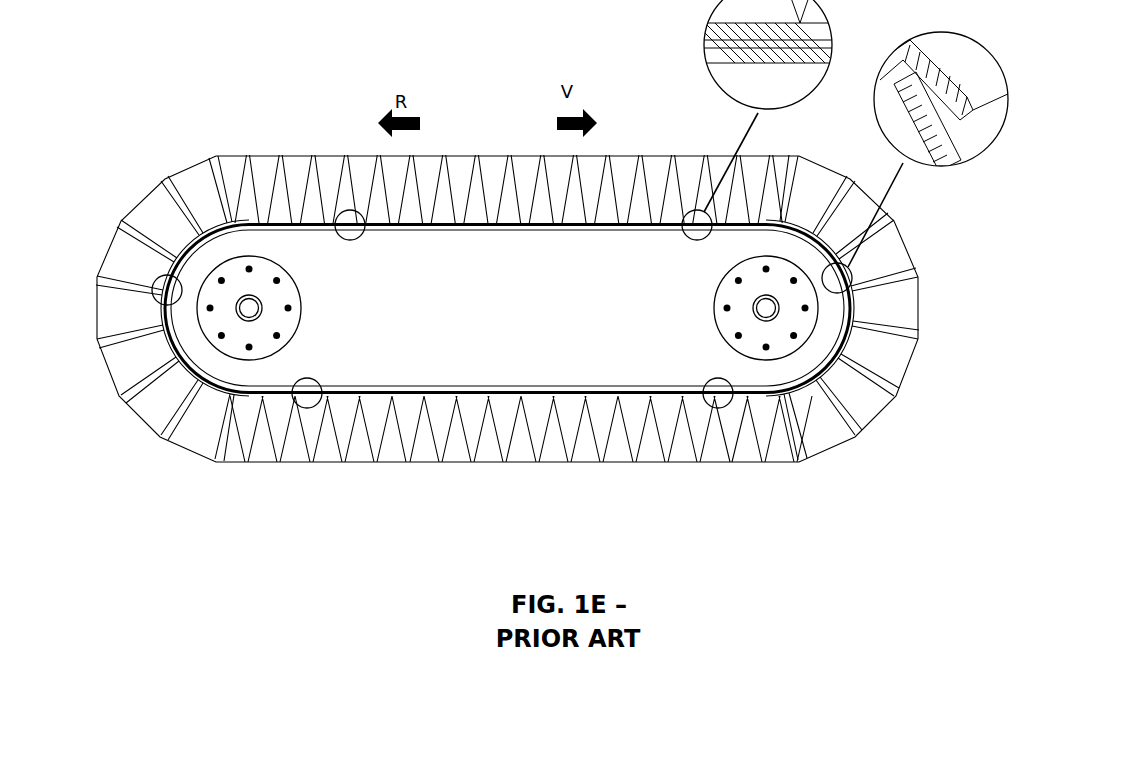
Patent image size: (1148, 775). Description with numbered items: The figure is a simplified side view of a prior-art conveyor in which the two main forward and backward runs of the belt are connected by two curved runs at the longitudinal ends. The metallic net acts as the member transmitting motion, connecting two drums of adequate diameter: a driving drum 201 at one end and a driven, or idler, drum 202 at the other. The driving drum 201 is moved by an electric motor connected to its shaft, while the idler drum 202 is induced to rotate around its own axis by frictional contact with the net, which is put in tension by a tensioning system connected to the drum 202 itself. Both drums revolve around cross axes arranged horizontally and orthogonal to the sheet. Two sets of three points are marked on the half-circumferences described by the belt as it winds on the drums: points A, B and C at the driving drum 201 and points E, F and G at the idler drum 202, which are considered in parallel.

The driving drum 201 is at (763, 357).
The driven drum 202 is at (237, 375).
The point A is at (747, 133).
The point B is at (908, 162).
The point C is at (703, 385).
The point E is at (350, 238).
The point F is at (177, 285).
The point G is at (311, 381).